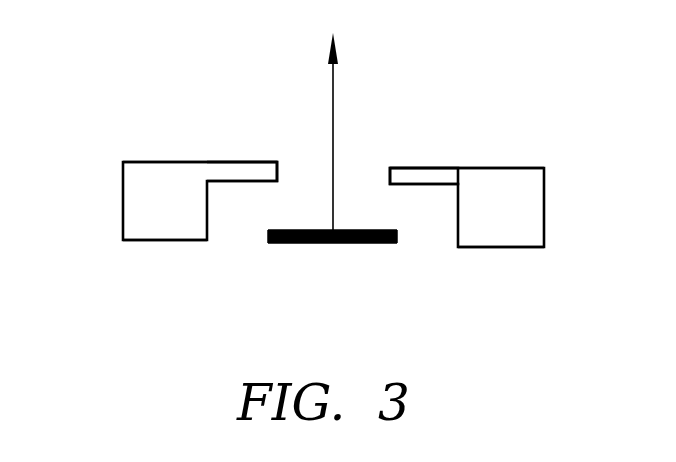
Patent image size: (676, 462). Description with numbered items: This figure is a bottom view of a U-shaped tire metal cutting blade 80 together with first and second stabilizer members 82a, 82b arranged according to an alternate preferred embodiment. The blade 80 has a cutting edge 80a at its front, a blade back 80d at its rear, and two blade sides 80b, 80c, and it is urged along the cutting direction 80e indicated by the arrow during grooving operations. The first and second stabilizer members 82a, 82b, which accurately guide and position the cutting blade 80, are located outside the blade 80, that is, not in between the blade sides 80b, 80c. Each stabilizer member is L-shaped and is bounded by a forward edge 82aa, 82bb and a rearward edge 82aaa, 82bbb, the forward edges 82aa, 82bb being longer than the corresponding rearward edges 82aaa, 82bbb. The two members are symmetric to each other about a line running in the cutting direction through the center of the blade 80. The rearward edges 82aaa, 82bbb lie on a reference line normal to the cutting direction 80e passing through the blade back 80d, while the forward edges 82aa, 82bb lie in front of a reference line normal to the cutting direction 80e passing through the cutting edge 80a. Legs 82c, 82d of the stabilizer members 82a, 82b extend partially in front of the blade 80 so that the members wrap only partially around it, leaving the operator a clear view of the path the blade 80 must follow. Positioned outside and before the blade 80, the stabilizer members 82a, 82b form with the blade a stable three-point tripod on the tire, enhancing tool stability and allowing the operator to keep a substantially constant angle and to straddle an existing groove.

The U-shaped tire metal cutting blade 80 is at (300, 245).
The cutting edge 80a is at (353, 230).
The blade side 80b is at (268, 231).
The blade side 80c is at (397, 238).
The blade back 80d is at (368, 252).
The cutting direction 80e is at (333, 102).
The first stabilizer member 82a is at (136, 222).
The forward edge 82aa is at (168, 162).
The rearward edge 82aaa is at (153, 240).
The leg 82c is at (226, 170).
The second stabilizer member 82b is at (516, 238).
The forward edge 82bb is at (447, 165).
The rearward edge 82bbb is at (480, 247).
The leg 82d is at (410, 178).